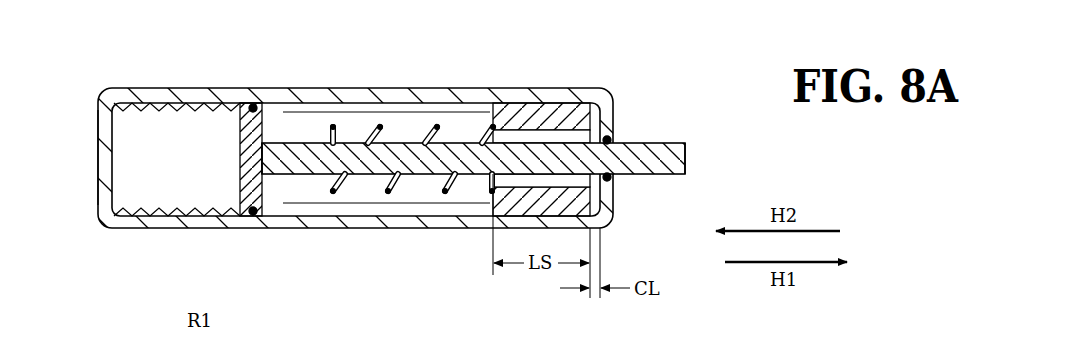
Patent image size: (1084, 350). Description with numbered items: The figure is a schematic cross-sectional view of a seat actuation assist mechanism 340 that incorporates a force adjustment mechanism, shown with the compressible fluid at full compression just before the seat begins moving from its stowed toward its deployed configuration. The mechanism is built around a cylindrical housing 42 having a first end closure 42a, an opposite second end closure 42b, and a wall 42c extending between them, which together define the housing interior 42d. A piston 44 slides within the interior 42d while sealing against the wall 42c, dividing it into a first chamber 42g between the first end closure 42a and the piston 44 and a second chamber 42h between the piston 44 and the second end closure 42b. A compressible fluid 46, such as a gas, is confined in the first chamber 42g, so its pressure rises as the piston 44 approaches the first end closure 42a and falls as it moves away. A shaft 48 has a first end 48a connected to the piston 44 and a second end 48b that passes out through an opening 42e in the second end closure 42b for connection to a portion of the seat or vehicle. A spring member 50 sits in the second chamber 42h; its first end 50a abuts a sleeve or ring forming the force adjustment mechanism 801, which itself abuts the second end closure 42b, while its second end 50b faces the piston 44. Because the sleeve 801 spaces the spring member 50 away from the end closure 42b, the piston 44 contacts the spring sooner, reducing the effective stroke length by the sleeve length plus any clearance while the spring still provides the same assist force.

The seat actuation assist mechanism 340 is at (751, 55).
The housing 42 is at (432, 80).
The first end closure 42a is at (98, 158).
The second end closure 42b is at (617, 118).
The wall 42c is at (252, 98).
The interior 42d is at (320, 112).
The opening 42e is at (612, 185).
The first chamber 42g is at (122, 95).
The second chamber 42h is at (400, 112).
The piston 44 is at (240, 137).
The compressible fluid 46 is at (98, 175).
The shaft 48 is at (655, 143).
The first end of shaft 48a is at (276, 158).
The second end of shaft 48b is at (678, 170).
The spring member 50 is at (392, 192).
The first end of spring member 50a is at (478, 110).
The second end of spring member 50b is at (333, 120).
The force adjustment mechanism 801 is at (575, 108).